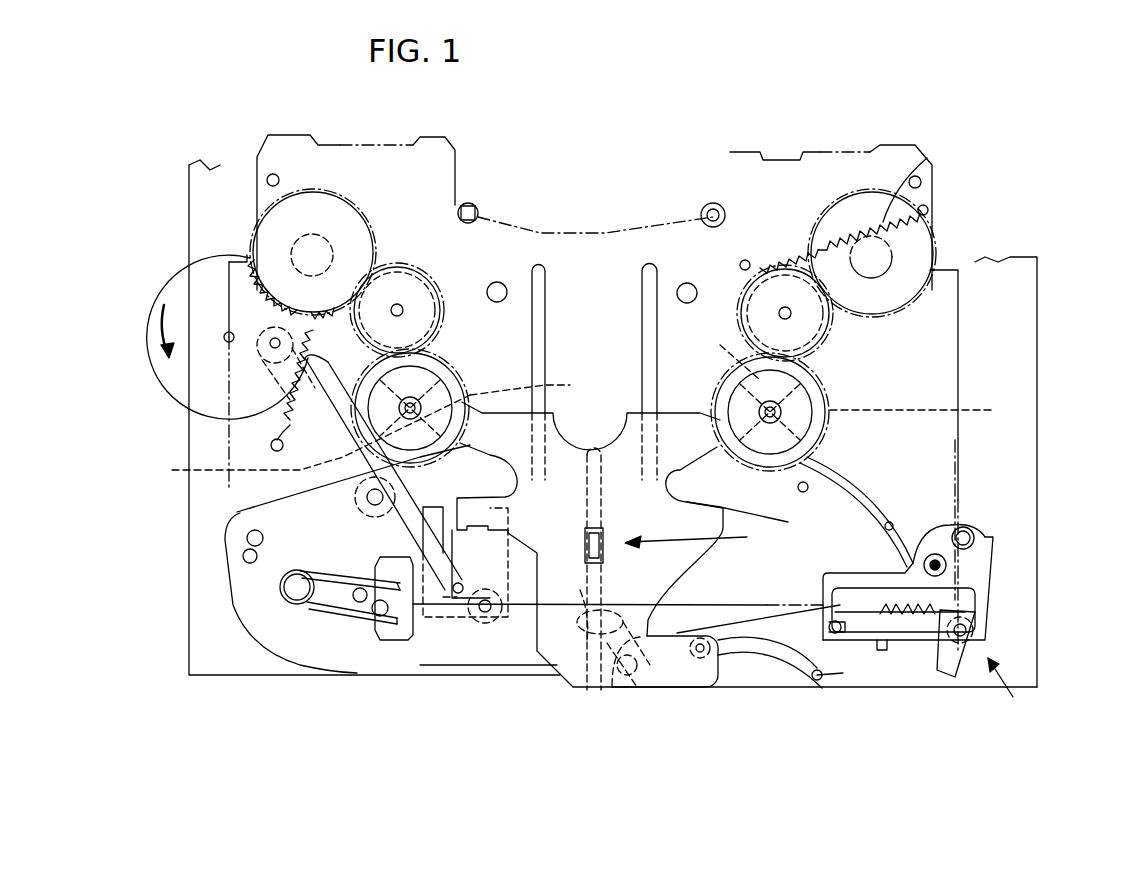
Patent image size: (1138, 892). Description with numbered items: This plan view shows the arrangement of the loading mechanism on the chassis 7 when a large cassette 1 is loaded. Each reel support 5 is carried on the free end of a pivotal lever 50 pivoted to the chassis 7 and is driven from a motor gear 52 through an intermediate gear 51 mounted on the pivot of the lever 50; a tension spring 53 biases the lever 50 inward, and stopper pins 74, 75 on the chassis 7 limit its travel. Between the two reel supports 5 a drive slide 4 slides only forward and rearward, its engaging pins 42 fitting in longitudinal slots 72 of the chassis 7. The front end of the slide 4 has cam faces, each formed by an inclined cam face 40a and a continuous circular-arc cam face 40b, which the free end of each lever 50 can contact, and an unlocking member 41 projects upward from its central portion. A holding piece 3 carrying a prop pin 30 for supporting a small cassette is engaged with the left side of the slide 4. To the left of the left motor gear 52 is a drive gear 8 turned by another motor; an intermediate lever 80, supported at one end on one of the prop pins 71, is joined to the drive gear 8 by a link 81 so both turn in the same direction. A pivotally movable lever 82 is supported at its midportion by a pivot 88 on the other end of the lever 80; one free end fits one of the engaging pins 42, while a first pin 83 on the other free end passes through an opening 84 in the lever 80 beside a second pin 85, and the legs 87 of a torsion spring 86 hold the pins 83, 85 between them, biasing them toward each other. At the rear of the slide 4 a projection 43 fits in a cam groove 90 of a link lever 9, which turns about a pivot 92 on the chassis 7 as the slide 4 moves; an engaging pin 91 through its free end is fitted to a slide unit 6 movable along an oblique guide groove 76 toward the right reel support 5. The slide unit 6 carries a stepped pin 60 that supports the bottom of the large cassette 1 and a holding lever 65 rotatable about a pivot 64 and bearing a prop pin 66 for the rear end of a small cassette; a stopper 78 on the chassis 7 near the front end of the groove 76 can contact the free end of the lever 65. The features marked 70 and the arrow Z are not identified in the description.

The large cassette 1 is at (960, 388).
The holding piece 3 is at (462, 592).
The drive slide 4 is at (678, 433).
The reel support 5 is at (455, 400).
The slide unit 6 is at (1042, 727).
The chassis 7 is at (1042, 336).
The drive gear 8 is at (178, 285).
The link lever 9 is at (790, 675).
The prop pin 30 is at (458, 582).
The inclined cam face 40a is at (615, 355).
The circular-arc cam face 40b is at (507, 470).
The unlocking member 41 is at (605, 550).
The engaging pin 42 is at (583, 700).
The projection 43 is at (700, 655).
The pivotal lever 50 is at (445, 300).
The intermediate gear 51 is at (413, 268).
The motor gear 52 is at (328, 210).
The tension spring 53 is at (272, 444).
The stepped pin 60 is at (960, 537).
The pivot 64 is at (965, 632).
The holding lever 65 is at (993, 570).
The prop pin 66 is at (975, 525).
The pin 70 is at (472, 203).
The prop pin 71 is at (270, 180).
The slot 72 is at (540, 265).
The stopper pin 74 is at (576, 438).
The stopper pin 75 is at (497, 282).
The guide groove 76 is at (893, 526).
The stopper 78 is at (797, 489).
The intermediate lever 80 is at (318, 642).
The link 81 is at (317, 463).
The pivotally movable lever 82 is at (510, 653).
The first pin 83 is at (383, 616).
The opening 84 is at (365, 602).
The second pin 85 is at (322, 607).
The torsion spring 86 is at (280, 600).
The leg 87 is at (353, 573).
The pivot 88 is at (487, 612).
The cam groove 90 is at (817, 683).
The engaging pin 91 is at (838, 633).
The pivot 92 is at (640, 683).
The direction arrow Z is at (696, 541).